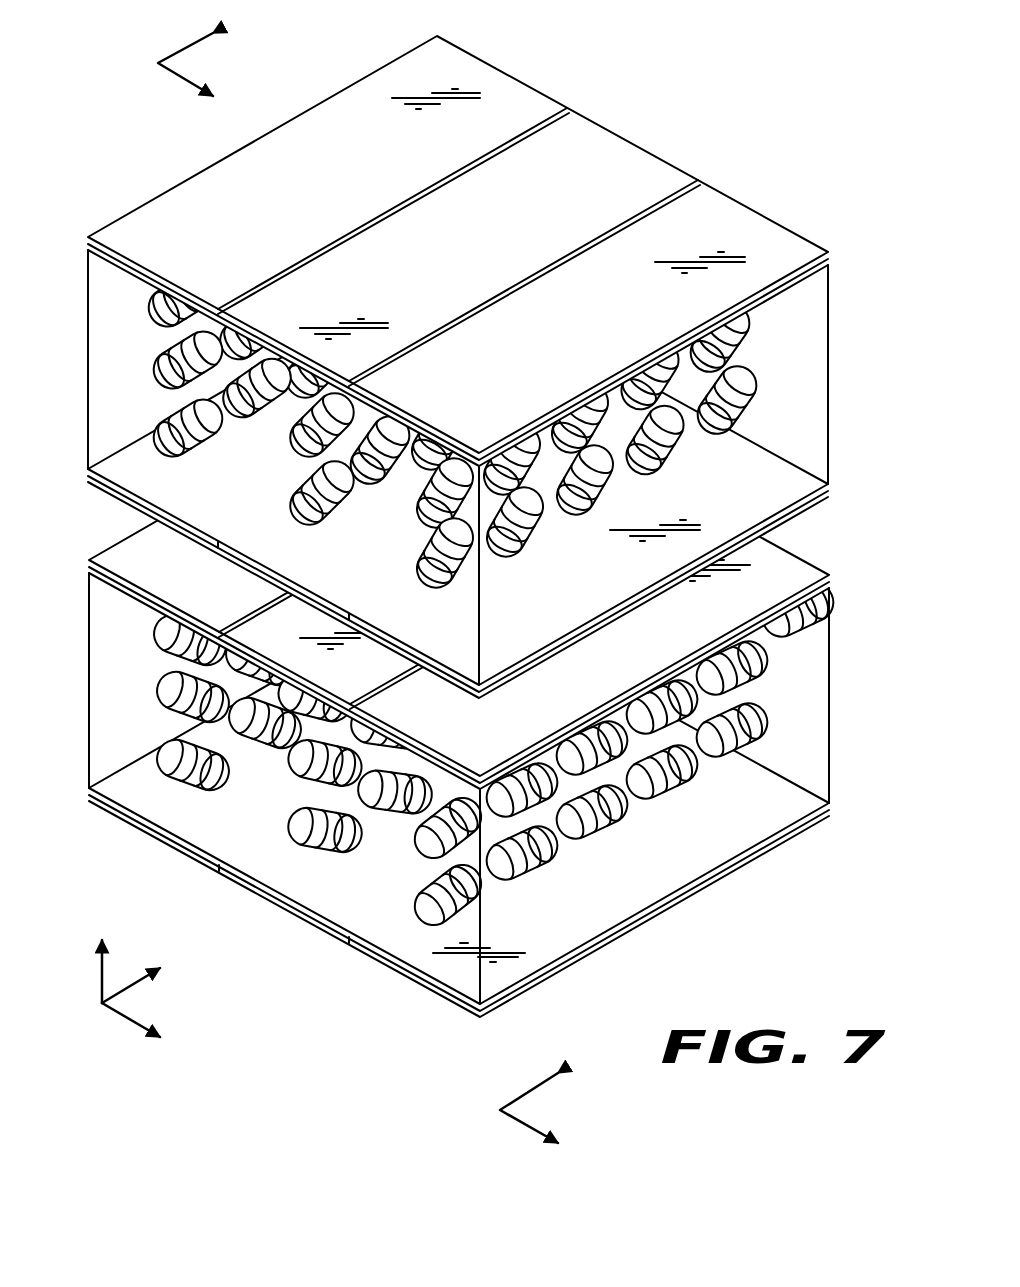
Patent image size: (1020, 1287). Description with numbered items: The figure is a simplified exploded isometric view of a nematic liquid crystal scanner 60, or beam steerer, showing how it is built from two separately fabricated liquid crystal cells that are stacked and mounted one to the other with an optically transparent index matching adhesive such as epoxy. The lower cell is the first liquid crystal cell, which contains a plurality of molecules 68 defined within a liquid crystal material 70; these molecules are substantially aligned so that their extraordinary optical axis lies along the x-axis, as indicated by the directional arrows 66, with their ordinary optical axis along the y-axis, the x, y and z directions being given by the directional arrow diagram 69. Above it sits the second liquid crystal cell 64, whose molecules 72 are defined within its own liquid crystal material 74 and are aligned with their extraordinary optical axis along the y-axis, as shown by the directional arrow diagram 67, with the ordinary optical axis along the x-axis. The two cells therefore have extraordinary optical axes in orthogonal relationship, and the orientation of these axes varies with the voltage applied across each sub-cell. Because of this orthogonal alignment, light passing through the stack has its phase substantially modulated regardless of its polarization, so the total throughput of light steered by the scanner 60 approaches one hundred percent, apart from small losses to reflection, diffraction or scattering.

The liquid crystal scanner 60 is at (486, 526).
The second liquid crystal cell 64 is at (685, 142).
The directional arrows 66 is at (500, 1083).
The directional arrow diagram 67 is at (154, 36).
The molecules 68 is at (164, 704).
The directional arrow diagram 69 is at (94, 978).
The liquid crystal material 70 is at (487, 688).
The molecules 72 is at (198, 446).
The liquid crystal material 74 is at (486, 367).